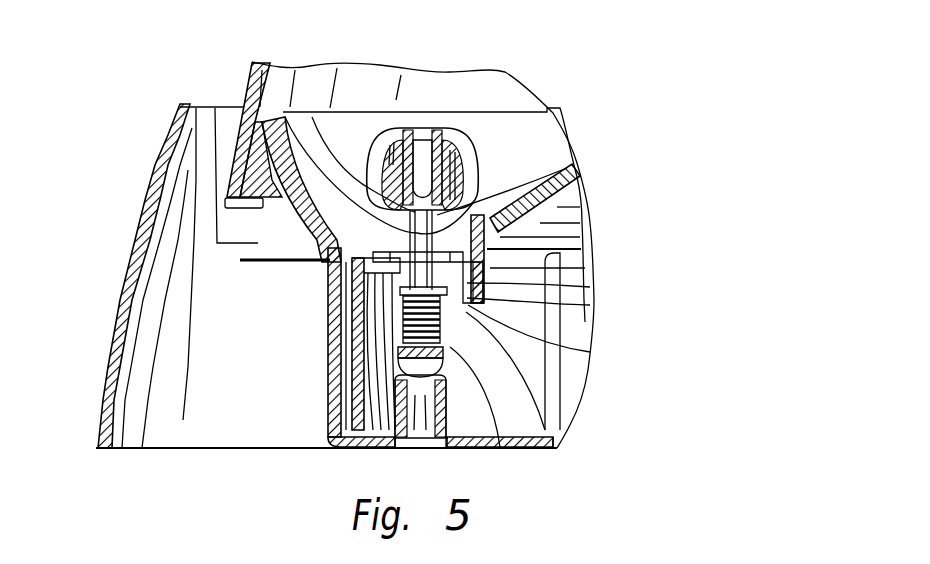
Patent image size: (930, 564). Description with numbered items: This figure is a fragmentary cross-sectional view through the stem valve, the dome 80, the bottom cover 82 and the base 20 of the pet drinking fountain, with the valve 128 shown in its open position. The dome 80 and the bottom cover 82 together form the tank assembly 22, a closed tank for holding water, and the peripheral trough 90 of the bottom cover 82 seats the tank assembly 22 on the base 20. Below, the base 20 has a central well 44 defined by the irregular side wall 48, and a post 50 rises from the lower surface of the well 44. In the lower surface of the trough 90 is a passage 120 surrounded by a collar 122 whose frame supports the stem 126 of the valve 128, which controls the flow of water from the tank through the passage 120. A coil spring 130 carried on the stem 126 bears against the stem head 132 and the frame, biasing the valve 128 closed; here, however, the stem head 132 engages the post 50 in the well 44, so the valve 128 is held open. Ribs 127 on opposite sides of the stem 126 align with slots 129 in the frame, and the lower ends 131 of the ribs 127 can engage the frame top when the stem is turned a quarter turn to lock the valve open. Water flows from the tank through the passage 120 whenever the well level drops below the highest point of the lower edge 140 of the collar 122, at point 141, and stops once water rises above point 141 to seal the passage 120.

The base 20 is at (103, 333).
The tank assembly 22 is at (512, 76).
The central well 44 is at (528, 410).
The irregular side wall 48 is at (330, 393).
The post 50 is at (467, 432).
The dome 80 is at (251, 60).
The bottom cover 82 is at (299, 130).
The peripheral trough 90 is at (347, 180).
The passage 120 is at (585, 268).
The collar 122 is at (590, 305).
The stem 126 is at (417, 232).
The ribs 127 is at (573, 172).
The valve 128 is at (447, 128).
The slots 129 is at (590, 287).
The coil spring 130 is at (563, 398).
The lower ends of the ribs 131 is at (413, 290).
The stem head 132 is at (450, 365).
The lower edge of the collar 140 is at (448, 300).
The point 141 is at (443, 327).